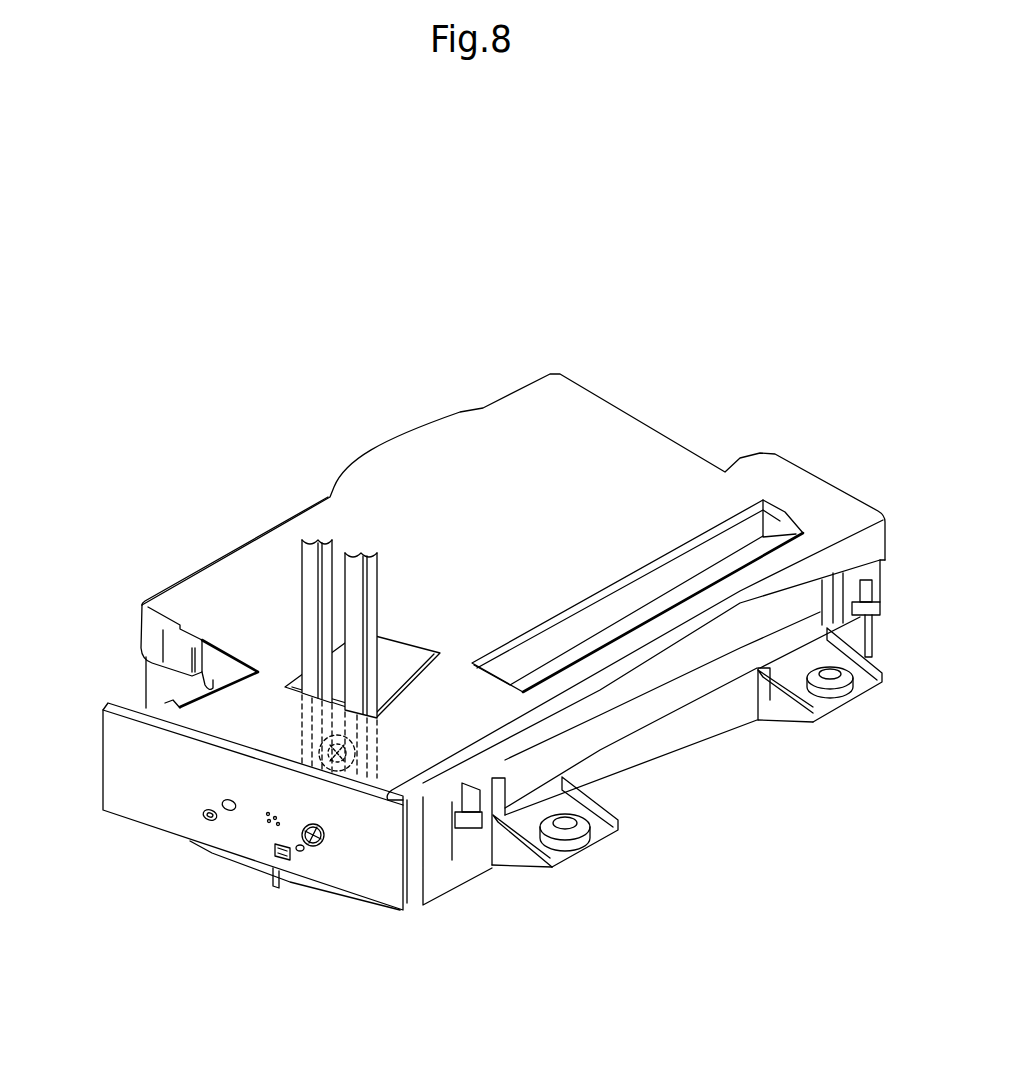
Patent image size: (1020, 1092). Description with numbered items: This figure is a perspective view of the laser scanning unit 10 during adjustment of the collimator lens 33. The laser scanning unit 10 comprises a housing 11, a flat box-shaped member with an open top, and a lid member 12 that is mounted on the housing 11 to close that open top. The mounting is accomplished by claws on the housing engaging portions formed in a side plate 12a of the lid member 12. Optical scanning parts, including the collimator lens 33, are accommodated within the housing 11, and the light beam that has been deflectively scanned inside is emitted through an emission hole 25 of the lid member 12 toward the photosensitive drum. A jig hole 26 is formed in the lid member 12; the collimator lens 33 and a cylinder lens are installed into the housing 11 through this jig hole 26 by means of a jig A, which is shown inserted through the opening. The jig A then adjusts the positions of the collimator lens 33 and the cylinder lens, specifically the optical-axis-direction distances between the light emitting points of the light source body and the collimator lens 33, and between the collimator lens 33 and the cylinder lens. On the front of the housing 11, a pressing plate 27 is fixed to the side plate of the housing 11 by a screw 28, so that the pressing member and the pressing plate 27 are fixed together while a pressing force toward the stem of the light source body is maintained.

The laser scanning unit 10 is at (674, 381).
The housing 11 is at (145, 677).
The lid member 12 is at (500, 397).
The side plate 12a is at (153, 628).
The emission hole 25 is at (778, 527).
The jig hole 26 is at (405, 656).
The pressing plate 27 is at (103, 752).
The screw 28 is at (313, 848).
The collimator lens 33 is at (335, 790).
The jig A is at (300, 615).